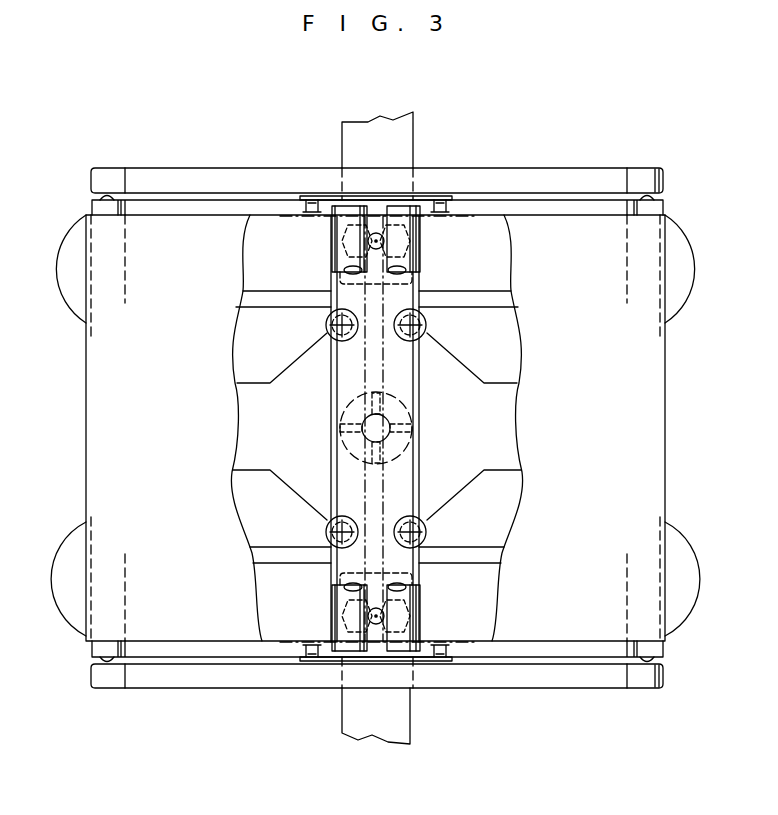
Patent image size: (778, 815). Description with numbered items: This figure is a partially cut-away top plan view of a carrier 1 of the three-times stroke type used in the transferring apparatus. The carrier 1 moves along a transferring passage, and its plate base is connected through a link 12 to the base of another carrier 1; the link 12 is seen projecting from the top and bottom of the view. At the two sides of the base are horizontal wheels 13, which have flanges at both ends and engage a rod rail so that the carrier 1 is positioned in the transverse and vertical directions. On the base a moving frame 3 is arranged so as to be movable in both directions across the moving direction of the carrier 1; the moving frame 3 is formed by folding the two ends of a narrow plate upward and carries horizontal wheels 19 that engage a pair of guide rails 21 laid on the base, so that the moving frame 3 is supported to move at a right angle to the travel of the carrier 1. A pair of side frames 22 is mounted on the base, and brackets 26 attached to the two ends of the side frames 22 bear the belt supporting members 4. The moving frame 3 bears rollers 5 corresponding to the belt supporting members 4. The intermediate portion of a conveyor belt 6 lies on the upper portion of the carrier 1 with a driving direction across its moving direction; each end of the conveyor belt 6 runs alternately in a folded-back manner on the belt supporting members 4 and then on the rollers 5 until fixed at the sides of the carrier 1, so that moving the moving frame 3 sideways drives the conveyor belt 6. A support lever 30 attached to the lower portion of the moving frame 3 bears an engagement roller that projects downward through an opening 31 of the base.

The carrier 1 is at (261, 135).
The moving frame 3 is at (403, 475).
The belt supporting member 4 is at (88, 649).
The roller 5 is at (331, 618).
The conveyor belt 6 is at (647, 427).
The link 12 is at (407, 142).
The horizontal wheel 13 is at (60, 272).
The horizontal wheel 19 is at (326, 323).
The guide rail 21 is at (287, 298).
The side frame 22 is at (539, 173).
The bracket 26 is at (103, 177).
The support lever 30 is at (388, 420).
The opening 31 is at (458, 378).